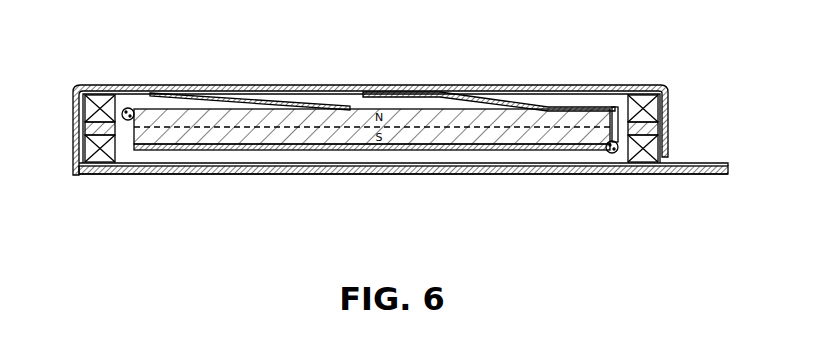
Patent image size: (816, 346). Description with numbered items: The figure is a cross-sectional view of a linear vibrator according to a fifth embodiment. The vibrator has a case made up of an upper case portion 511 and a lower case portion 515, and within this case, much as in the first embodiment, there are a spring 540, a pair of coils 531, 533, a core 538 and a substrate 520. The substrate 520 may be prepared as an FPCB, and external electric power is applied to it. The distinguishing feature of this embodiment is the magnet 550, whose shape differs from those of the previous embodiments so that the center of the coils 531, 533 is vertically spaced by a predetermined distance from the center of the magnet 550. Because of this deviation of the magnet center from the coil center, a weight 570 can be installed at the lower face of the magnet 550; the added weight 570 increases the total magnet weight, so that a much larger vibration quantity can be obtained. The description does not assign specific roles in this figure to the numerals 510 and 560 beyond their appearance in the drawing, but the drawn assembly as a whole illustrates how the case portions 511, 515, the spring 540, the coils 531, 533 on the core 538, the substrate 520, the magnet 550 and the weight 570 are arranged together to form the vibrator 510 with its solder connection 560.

The housing 510 is at (724, 107).
The upper case portion 511 is at (668, 113).
The lower case portion 515 is at (664, 167).
The substrate 520 is at (540, 176).
The coil 531 is at (100, 98).
The coil 533 is at (640, 102).
The core 538 is at (84, 130).
The spring 540 is at (243, 99).
The magnet 550 is at (343, 151).
The solder joint 560 is at (133, 172).
The weight 570 is at (249, 164).